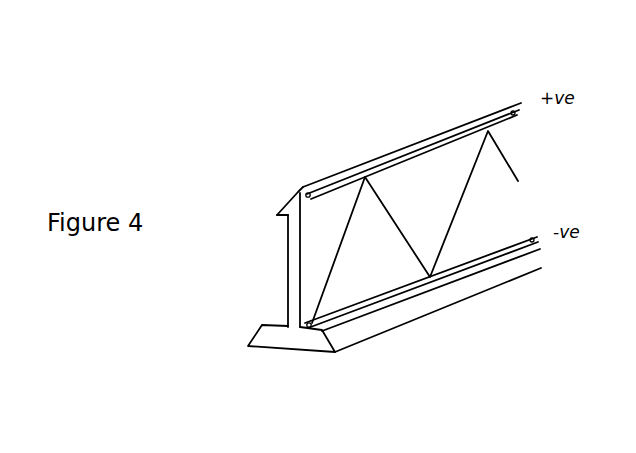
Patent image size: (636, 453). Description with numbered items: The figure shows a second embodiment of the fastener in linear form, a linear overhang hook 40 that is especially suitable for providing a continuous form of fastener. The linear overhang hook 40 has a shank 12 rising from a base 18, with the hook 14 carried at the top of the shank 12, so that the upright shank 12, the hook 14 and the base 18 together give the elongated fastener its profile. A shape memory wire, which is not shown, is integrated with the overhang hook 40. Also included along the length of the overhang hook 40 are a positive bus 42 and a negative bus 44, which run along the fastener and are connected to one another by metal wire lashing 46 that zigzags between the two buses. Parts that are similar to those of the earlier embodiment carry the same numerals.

The linear overhang hook 40 is at (366, 113).
The positive bus 42 is at (425, 147).
The negative bus 44 is at (500, 252).
The metal wire lashing 46 is at (413, 250).
The hook 14 is at (285, 205).
The shank 12 is at (287, 276).
The base 18 is at (267, 342).